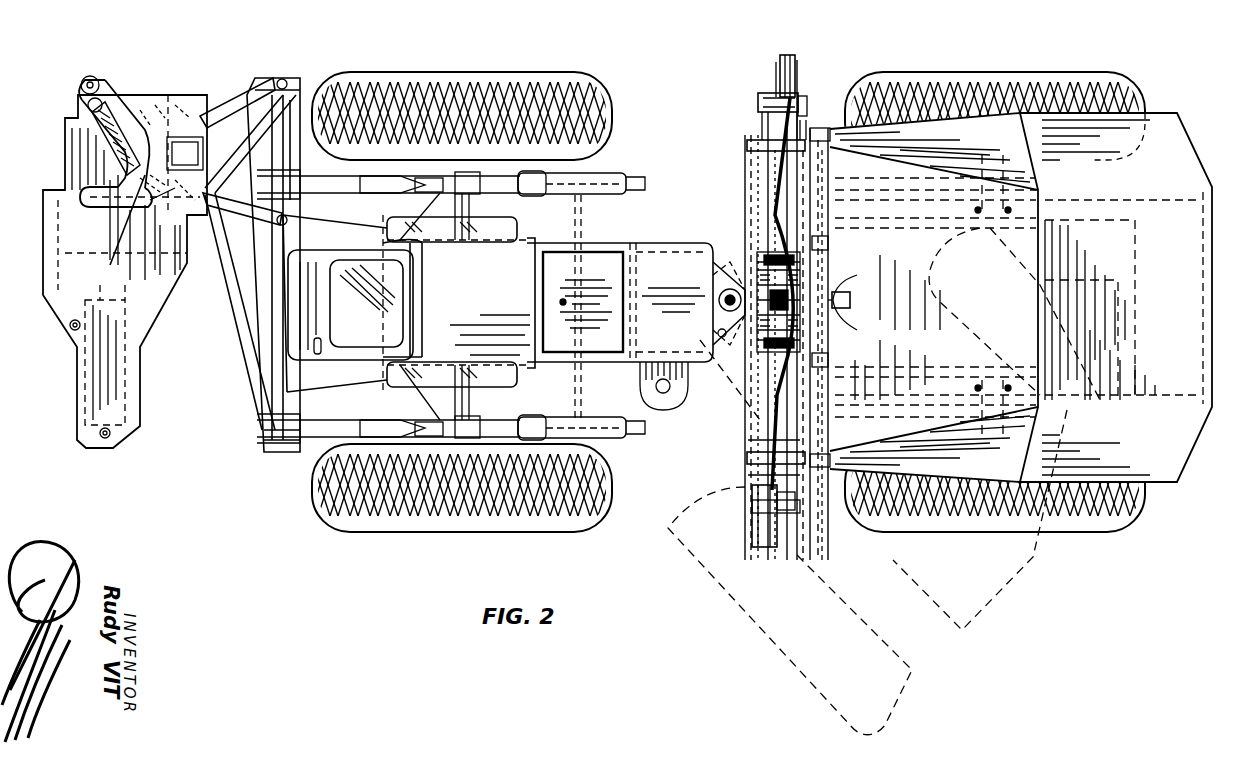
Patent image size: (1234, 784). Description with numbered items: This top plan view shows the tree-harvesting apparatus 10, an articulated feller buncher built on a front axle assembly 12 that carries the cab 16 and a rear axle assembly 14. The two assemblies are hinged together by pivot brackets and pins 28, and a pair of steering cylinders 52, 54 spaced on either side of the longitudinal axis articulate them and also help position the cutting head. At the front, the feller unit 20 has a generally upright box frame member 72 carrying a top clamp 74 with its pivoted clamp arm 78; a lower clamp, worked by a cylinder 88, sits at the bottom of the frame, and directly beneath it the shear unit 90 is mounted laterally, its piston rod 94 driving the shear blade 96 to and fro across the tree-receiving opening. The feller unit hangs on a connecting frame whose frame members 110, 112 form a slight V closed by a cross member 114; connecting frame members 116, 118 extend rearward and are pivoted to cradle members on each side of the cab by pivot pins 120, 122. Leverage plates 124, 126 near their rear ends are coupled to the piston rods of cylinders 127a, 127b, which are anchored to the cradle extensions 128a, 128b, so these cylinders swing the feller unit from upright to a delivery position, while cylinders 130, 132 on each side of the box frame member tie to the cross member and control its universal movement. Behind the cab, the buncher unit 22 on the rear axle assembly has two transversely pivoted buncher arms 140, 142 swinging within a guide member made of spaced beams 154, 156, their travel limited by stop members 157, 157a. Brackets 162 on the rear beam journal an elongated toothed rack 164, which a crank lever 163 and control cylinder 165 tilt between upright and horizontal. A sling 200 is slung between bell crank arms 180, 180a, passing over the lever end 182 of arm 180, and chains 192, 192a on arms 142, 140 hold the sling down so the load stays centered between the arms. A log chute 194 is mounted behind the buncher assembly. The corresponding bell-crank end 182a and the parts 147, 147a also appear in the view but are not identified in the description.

The tree-harvesting apparatus 10 is at (262, 372).
The front axle assembly 12 is at (410, 540).
The rear axle assembly 14 is at (960, 528).
The cab 16 is at (485, 314).
The feller unit 20 is at (105, 254).
The buncher unit 22 is at (870, 251).
The pivot bracket and pin 28 is at (712, 262).
The steering cylinder 52 is at (742, 262).
The steering cylinder 54 is at (730, 338).
The box frame member 72 is at (165, 205).
The top clamp 74 is at (168, 98).
The pivoted clamp arm 78 is at (85, 130).
The cylinder 88 is at (150, 95).
The shear unit 90 is at (42, 240).
The piston rod 94 is at (128, 386).
The shear blade 96 is at (68, 172).
The frame member 110 is at (250, 144).
The frame member 112 is at (240, 290).
The cross member 114 is at (250, 262).
The connecting frame member 116 is at (388, 306).
The connecting frame member 118 is at (297, 445).
The pivot pin 120 is at (448, 178).
The pivot pin 122 is at (455, 437).
The leverage plate 124 is at (395, 176).
The leverage plate 126 is at (400, 437).
The cylinder 127a is at (598, 173).
The cylinder 127b is at (618, 438).
The extension 128a is at (638, 186).
The extension 128b is at (645, 420).
The cylinder 130 is at (240, 100).
The cylinder 132 is at (230, 222).
The buncher arm 140 is at (772, 185).
The buncher arm 142 is at (770, 418).
The bracket 147 is at (795, 480).
The bracket 147a is at (805, 108).
The beam 154 is at (745, 490).
The rear beam member 156 is at (803, 130).
The stop member 157 is at (752, 140).
The stop member 157a is at (748, 458).
The bracket 162 is at (834, 140).
The crank lever 163 is at (855, 300).
The toothed rack 164 is at (832, 212).
The control cylinder 165 is at (845, 278).
The bell crank arm 180 is at (752, 510).
The bell crank arm 180a is at (762, 95).
The lever end 182 is at (775, 535).
The post 182a is at (780, 72).
The chain 192 is at (775, 178).
The chain 192a is at (775, 425).
The log chute 194 is at (1005, 308).
The sling 200 is at (818, 337).